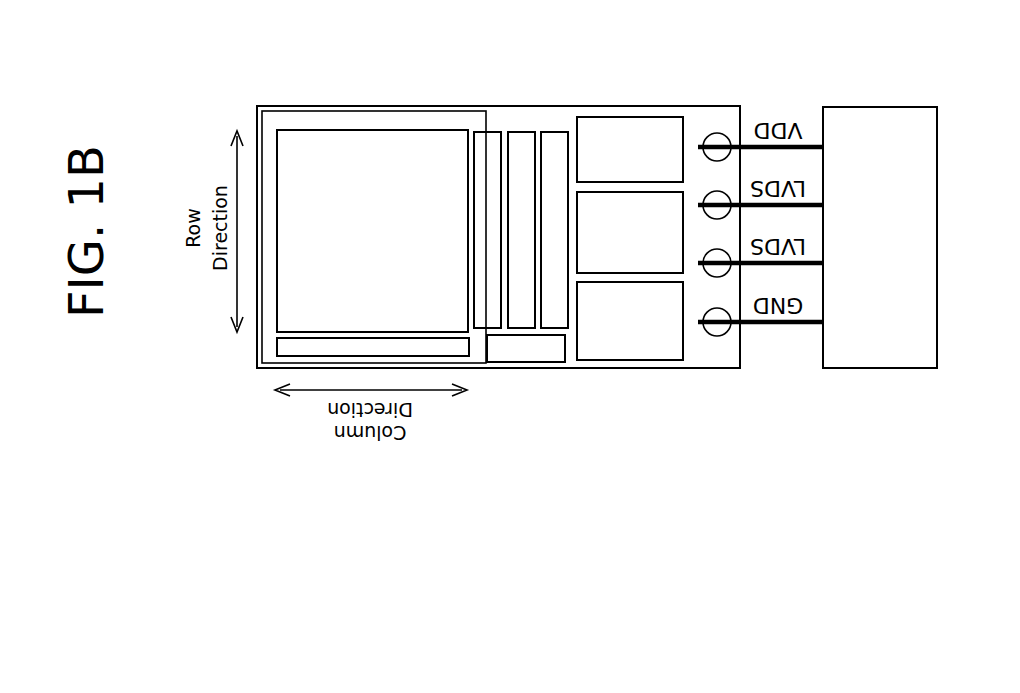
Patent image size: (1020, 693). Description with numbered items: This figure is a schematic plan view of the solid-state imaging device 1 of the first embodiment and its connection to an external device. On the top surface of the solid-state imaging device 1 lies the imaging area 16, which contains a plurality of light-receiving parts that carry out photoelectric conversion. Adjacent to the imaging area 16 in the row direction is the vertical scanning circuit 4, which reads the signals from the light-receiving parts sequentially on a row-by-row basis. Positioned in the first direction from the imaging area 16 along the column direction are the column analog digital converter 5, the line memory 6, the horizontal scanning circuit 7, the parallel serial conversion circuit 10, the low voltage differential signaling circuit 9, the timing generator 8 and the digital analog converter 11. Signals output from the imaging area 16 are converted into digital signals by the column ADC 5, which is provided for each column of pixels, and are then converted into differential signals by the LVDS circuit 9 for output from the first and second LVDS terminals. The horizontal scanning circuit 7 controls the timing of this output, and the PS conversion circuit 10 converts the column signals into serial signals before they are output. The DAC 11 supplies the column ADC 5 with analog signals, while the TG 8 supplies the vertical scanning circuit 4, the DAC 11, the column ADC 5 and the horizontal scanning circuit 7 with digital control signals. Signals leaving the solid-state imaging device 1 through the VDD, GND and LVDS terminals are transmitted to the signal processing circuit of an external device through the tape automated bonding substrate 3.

The solid-state imaging device 1 is at (292, 88).
The tape automated bonding (TAB) substrate 3 is at (880, 368).
The vertical scanning circuit 4 is at (277, 347).
The column analog digital converter (column ADC) 5 is at (491, 132).
The line memory 6 is at (522, 132).
The horizontal scanning circuit 7 is at (558, 132).
The timing generator (TG) 8 is at (633, 361).
The low voltage differential signaling (LVDS) circuit 9 is at (686, 256).
The parallel serial (PS) conversion circuit 10 is at (642, 117).
The digital analog converter (DAC) 11 is at (534, 363).
The imaging area 16 is at (363, 152).